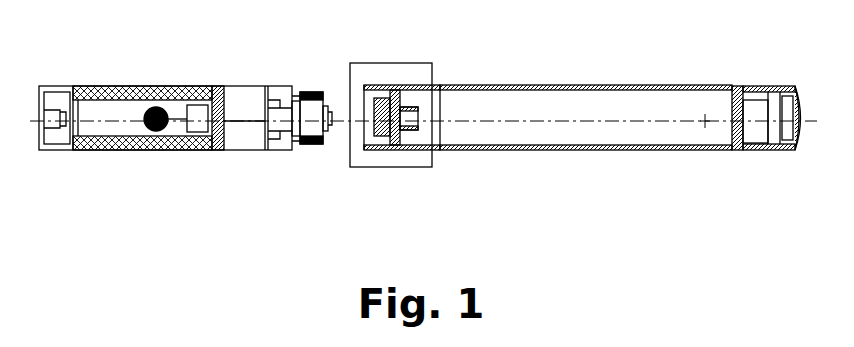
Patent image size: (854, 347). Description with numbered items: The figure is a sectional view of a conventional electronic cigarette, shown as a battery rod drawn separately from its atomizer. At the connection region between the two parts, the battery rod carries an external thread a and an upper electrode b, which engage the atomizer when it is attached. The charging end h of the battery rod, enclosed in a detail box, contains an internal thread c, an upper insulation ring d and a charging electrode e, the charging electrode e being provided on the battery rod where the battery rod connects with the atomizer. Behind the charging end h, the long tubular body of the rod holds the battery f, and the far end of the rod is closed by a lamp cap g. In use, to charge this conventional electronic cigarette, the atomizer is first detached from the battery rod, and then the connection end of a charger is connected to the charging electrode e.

The external thread a is at (312, 90).
The upper electrode b is at (321, 146).
The internal thread c is at (367, 150).
The upper insulation ring d is at (394, 150).
The charging electrode e is at (417, 150).
The battery f is at (587, 138).
The lamp cap g is at (795, 152).
The charging end h is at (431, 166).